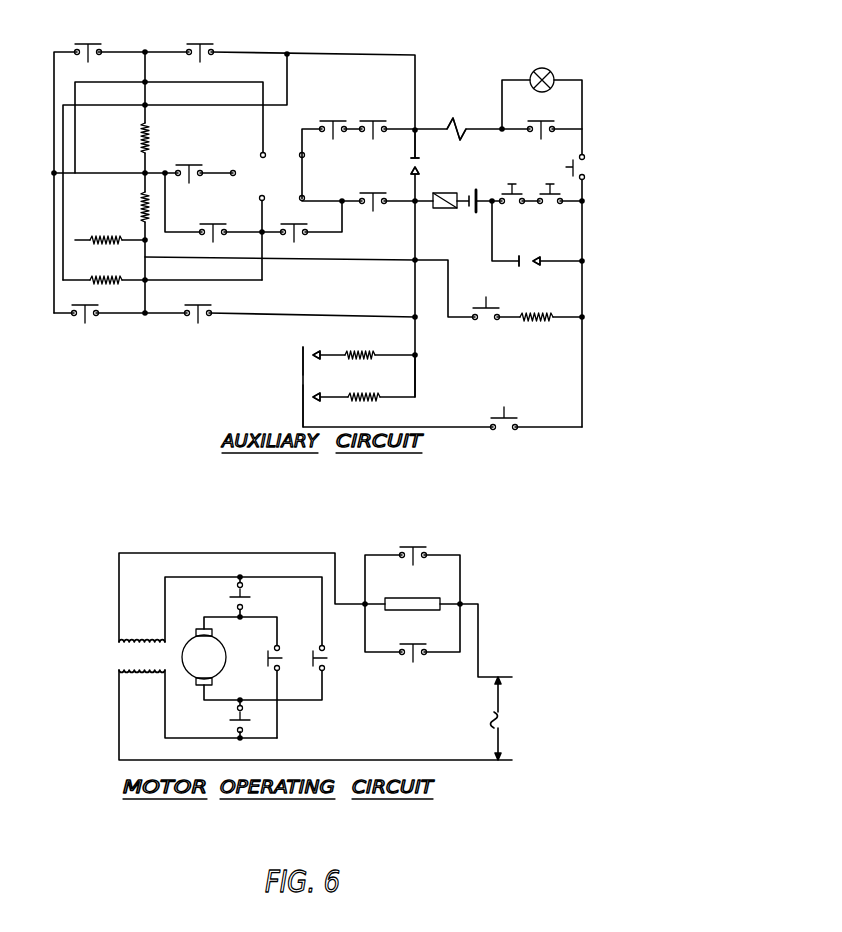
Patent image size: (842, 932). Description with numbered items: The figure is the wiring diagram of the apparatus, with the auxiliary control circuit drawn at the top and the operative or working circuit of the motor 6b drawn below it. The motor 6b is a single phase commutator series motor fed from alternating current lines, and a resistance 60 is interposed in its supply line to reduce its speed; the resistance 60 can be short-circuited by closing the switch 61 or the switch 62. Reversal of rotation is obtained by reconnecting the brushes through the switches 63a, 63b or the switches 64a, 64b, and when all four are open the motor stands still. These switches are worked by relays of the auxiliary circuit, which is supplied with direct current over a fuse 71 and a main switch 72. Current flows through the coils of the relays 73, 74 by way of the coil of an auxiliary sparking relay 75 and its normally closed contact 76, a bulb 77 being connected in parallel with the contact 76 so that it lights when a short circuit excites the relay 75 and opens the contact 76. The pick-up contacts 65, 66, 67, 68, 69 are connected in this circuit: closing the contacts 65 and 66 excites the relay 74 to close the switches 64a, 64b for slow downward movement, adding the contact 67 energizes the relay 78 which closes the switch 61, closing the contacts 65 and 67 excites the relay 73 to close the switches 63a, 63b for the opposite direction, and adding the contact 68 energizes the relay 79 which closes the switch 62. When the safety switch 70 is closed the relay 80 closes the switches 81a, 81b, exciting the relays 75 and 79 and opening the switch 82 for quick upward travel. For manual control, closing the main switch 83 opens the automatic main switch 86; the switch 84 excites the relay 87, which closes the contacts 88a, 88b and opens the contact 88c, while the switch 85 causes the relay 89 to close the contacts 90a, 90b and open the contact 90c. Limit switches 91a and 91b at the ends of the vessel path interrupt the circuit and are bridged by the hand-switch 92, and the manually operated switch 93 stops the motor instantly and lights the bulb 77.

The contact 90a is at (92, 42).
The contact 90b is at (190, 42).
The relay 73 is at (140, 133).
The relay 74 is at (140, 205).
The main switch of the automatic control circuit 86 is at (192, 160).
The pick-up contact 65 is at (236, 166).
The pick-up contact 69 is at (266, 157).
The pick-up contact 66 is at (305, 157).
The pick-up contact 68 is at (264, 196).
The pick-up contact 67 is at (305, 196).
The relay 78 is at (102, 228).
The relay 79 is at (108, 277).
The switch 81a is at (213, 225).
The switch 81b is at (301, 216).
The contact 88a is at (90, 322).
The contact 88b is at (190, 322).
The contact 88c is at (368, 126).
The switch 82 is at (337, 126).
The auxiliary sparking relay 75 is at (463, 126).
The bulb 77 is at (532, 70).
The normally closed contact 76 is at (543, 126).
The main switch 72 is at (565, 165).
The manually operated switch 93 is at (411, 164).
The contact 90c is at (374, 212).
The fuse 71 is at (446, 192).
The limit switch 91a is at (512, 206).
The limit switch 91b is at (550, 194).
The hand-switch 92 is at (522, 268).
The safety switch 70 is at (486, 293).
The relay 80 is at (537, 330).
The relay 87 is at (352, 351).
The relay 89 is at (352, 393).
The switch 84 is at (296, 355).
The switch 85 is at (296, 397).
The main switch of the manual control circuit 83 is at (500, 409).
The electric motor 6b is at (200, 654).
The switch 64a is at (230, 600).
The switch 64b is at (230, 718).
The switch 63a is at (257, 659).
The switch 63b is at (305, 659).
The switch 61 is at (412, 553).
The resistance 60 is at (411, 602).
The switch 62 is at (412, 647).